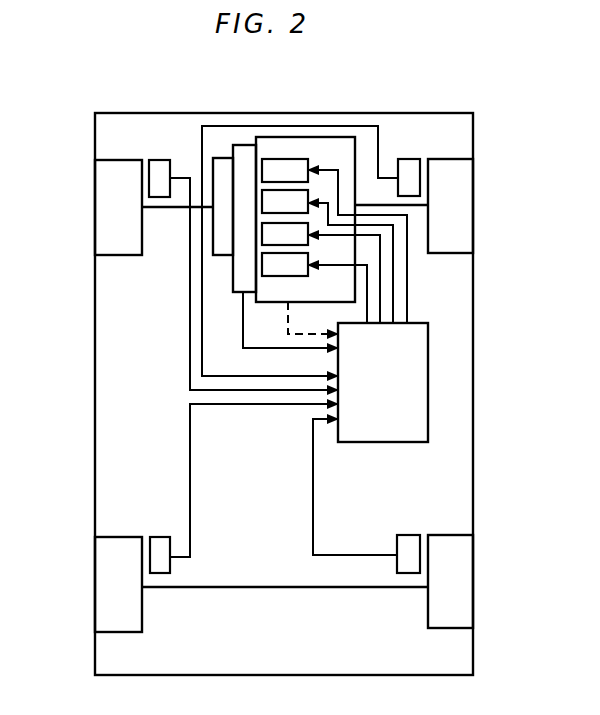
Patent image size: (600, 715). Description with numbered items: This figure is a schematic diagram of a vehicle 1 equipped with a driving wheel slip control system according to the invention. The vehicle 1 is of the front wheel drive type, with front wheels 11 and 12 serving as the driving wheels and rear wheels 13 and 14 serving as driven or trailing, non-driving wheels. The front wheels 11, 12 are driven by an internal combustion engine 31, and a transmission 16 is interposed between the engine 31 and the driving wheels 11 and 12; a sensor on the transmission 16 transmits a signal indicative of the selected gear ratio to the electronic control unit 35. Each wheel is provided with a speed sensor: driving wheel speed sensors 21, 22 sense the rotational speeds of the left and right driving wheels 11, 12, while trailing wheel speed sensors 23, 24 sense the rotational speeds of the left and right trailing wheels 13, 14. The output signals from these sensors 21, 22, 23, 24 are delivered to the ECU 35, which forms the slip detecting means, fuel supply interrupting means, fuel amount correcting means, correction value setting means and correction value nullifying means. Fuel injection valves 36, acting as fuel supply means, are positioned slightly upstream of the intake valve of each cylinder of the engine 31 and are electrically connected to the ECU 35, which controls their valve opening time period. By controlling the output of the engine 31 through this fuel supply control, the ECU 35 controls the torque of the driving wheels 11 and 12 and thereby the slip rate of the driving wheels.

The vehicle 1 is at (450, 108).
The front wheel 11 is at (102, 207).
The front wheel 12 is at (462, 202).
The rear wheel 13 is at (100, 592).
The rear wheel 14 is at (470, 594).
The transmission 16 is at (243, 160).
The driving wheel speed sensor 21 is at (160, 197).
The driving wheel speed sensor 22 is at (412, 197).
The trailing wheel speed sensor 23 is at (162, 573).
The trailing wheel speed sensor 24 is at (408, 573).
The internal combustion engine 31 is at (345, 136).
The electronic control unit 35 is at (428, 365).
The fuel injection valve 36 is at (289, 262).